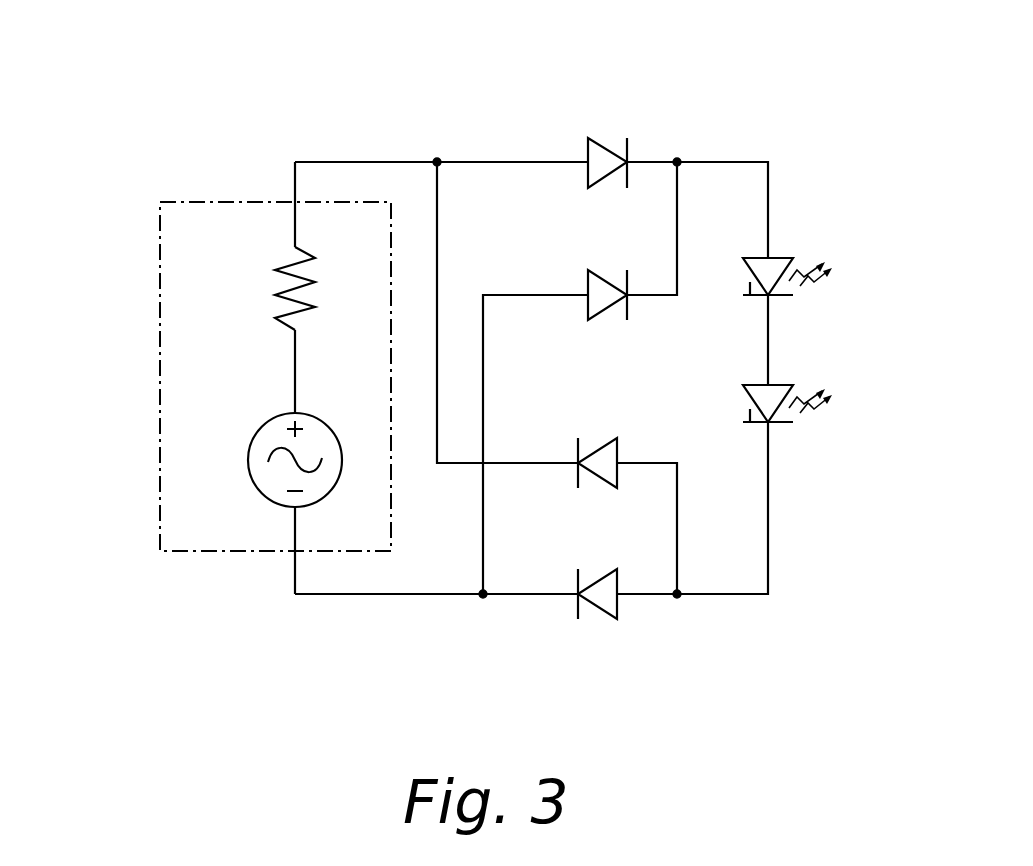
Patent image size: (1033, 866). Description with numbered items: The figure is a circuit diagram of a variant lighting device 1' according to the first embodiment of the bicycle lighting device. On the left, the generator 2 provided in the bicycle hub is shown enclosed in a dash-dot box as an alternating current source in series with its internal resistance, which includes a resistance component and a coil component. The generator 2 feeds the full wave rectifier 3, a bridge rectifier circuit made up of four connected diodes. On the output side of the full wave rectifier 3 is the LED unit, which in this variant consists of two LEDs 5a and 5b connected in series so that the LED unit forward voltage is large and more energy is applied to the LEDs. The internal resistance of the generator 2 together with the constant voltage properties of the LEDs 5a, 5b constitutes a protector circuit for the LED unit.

The lighting device 1' is at (586, 305).
The generator 2 is at (160, 360).
The full wave rectifier 3 is at (642, 144).
The LED 5a is at (798, 248).
The LED 5b is at (803, 368).